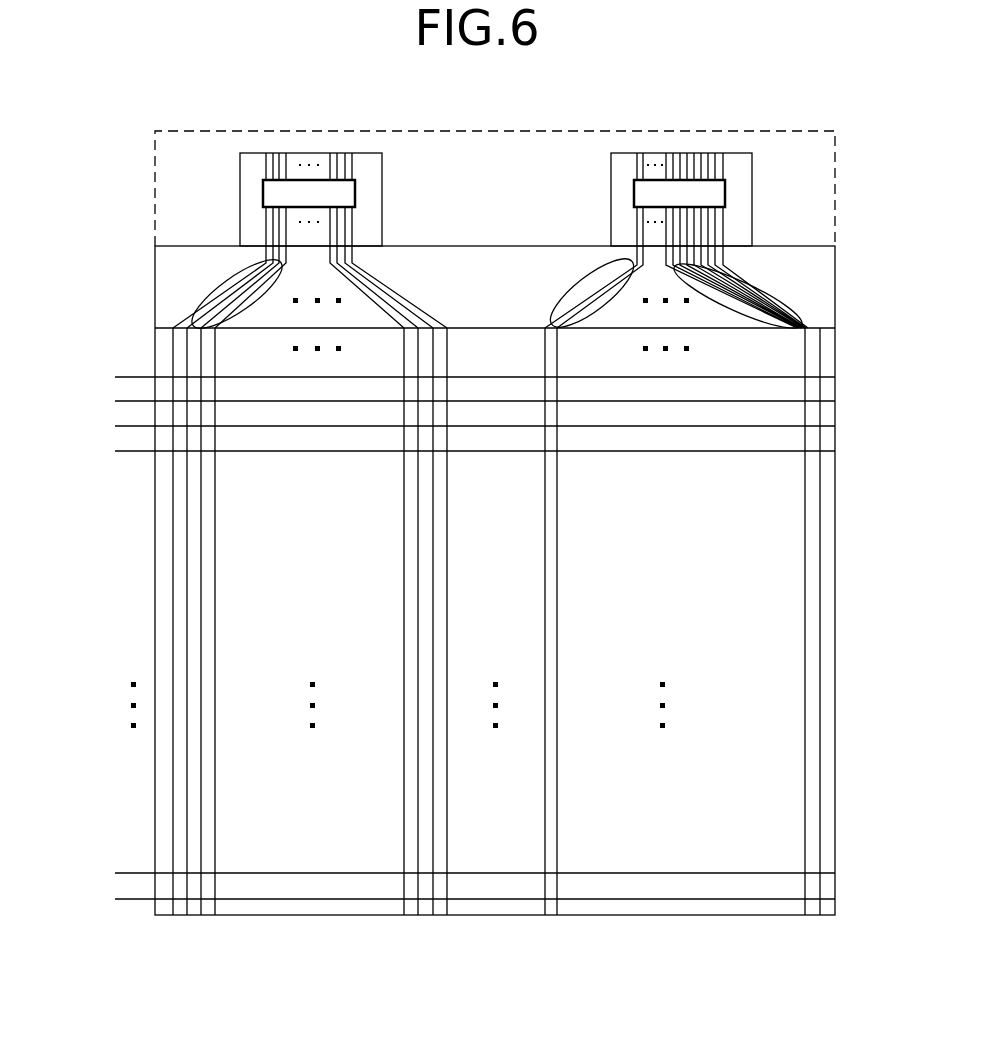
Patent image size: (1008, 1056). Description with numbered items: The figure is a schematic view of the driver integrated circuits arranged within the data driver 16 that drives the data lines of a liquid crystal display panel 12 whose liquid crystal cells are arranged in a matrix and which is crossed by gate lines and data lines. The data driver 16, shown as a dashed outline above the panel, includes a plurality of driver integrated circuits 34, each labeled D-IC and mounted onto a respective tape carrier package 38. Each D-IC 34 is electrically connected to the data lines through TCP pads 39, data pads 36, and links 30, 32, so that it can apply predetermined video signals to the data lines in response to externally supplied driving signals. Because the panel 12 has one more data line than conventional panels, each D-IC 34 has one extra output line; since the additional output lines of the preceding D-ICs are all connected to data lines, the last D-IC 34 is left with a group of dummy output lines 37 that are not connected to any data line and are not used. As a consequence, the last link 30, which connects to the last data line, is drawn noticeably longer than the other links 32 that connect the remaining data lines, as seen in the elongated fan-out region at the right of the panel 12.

The liquid crystal display panel 12 is at (836, 470).
The data driver 16 is at (718, 131).
The last link 30 is at (770, 295).
The links 32 is at (218, 292).
The driver integrated circuit 34 is at (355, 190).
The data pads 36 is at (352, 257).
The dummy output lines 37 is at (725, 255).
The tape carrier package 38 is at (382, 217).
The TCP pads 39 is at (266, 219).